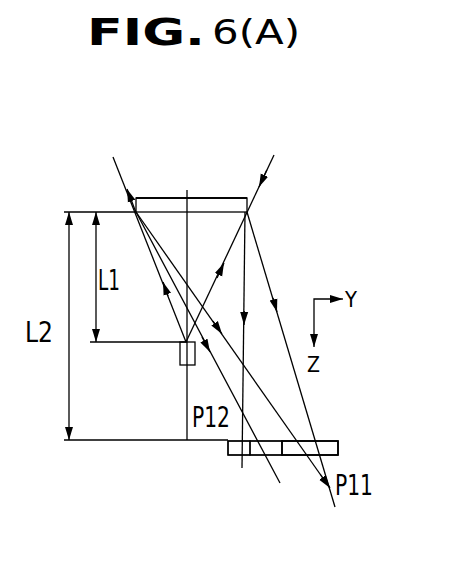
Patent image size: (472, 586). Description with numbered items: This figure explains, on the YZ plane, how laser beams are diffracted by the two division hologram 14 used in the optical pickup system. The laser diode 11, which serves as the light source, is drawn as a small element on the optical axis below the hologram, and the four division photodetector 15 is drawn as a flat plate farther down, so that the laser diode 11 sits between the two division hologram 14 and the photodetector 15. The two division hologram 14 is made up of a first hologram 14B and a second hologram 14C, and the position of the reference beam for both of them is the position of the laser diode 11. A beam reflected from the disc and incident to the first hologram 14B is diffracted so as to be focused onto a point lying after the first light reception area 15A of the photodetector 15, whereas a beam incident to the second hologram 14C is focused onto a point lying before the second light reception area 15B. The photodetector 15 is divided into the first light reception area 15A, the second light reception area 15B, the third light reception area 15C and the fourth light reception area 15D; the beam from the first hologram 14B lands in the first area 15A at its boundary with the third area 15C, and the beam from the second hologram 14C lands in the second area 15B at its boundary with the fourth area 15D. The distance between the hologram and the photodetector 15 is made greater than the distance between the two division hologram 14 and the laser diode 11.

The laser diode 11 is at (181, 360).
The two division hologram 14 is at (152, 197).
The first hologram 14B is at (222, 203).
The second hologram 14C is at (233, 149).
The four division photodetector 15 is at (227, 452).
The first light reception area 15A is at (398, 411).
The second light reception area 15B is at (248, 456).
The third light reception area 15C is at (361, 418).
The fourth light reception area 15D is at (264, 497).